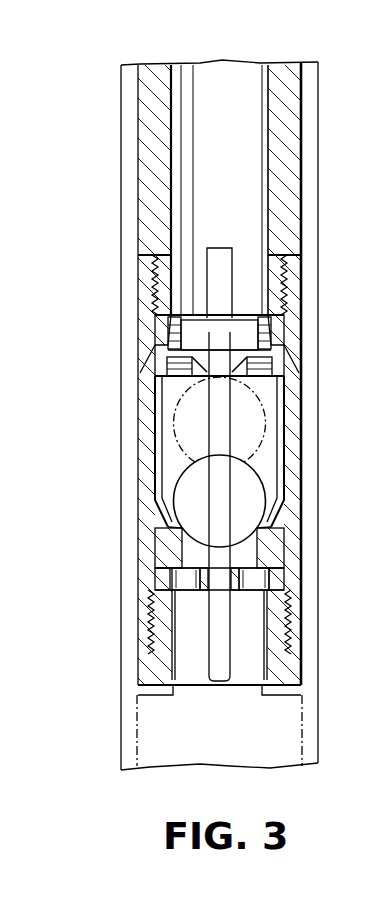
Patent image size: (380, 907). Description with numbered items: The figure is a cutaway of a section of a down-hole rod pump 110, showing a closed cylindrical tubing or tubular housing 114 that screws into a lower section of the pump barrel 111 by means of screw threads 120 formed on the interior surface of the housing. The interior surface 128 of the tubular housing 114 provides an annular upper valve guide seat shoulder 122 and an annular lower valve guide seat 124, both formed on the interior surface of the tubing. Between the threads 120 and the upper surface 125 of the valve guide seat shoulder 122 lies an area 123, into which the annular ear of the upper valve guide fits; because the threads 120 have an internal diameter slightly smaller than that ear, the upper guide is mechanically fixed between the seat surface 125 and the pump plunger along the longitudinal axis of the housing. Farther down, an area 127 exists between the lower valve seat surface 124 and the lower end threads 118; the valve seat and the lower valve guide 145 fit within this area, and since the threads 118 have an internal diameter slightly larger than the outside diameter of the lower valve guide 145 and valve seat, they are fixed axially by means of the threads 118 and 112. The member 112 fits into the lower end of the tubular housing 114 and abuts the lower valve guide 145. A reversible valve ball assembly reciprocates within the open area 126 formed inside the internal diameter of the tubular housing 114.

The down-hole pump 110 is at (110, 208).
The pump barrel 111 is at (136, 82).
The interior surface 128 is at (152, 130).
The screw threads 120 is at (288, 290).
The tubular housing 114 is at (297, 363).
The area between threads and seat surface 123 is at (170, 330).
The upper valve guide seat shoulder 122 is at (280, 353).
The upper surface of valve guide seat shoulder 125 is at (170, 337).
The open area 126 is at (170, 443).
The lower valve guide seat 124 is at (170, 533).
The lower valve guide 145 is at (170, 550).
The area between lower seat surface and lower threads 127 is at (282, 552).
The lower end threads 118 is at (293, 610).
The member 112 is at (303, 670).